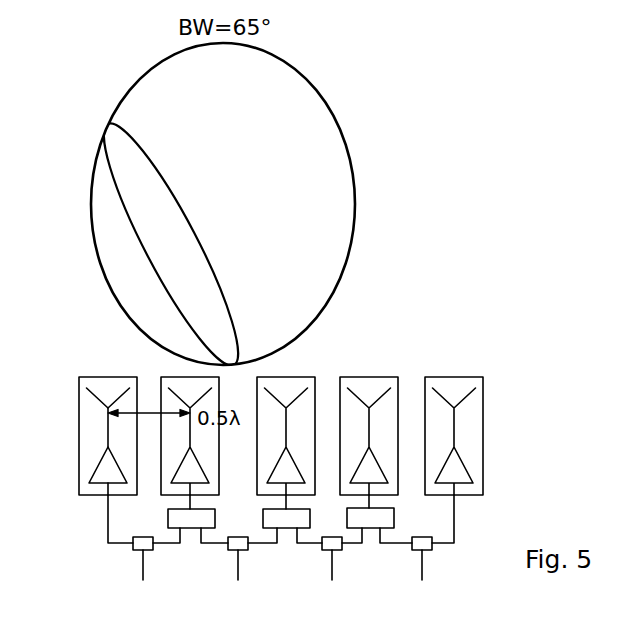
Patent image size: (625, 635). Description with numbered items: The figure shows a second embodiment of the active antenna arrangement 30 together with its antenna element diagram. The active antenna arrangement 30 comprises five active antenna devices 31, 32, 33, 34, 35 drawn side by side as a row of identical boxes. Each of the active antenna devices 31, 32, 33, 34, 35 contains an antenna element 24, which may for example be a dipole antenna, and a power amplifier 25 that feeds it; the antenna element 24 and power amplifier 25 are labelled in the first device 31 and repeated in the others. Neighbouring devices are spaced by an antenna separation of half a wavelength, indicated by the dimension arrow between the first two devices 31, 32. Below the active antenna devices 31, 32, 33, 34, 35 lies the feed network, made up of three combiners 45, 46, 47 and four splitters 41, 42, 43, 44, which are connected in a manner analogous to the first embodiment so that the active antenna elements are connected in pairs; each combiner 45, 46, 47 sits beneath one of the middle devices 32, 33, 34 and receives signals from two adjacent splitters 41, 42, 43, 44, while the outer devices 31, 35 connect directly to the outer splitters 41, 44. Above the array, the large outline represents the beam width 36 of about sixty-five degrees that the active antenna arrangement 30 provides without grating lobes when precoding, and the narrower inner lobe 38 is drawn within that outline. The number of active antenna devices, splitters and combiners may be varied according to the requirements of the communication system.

The antenna element 24 is at (97, 397).
The power amplifier 25 is at (100, 467).
The active antenna arrangement 30 is at (513, 280).
The active antenna device 31 is at (77, 445).
The active antenna device 32 is at (173, 382).
The active antenna device 33 is at (299, 381).
The active antenna device 34 is at (379, 381).
The active antenna device 35 is at (463, 380).
The beam width 36 is at (343, 275).
The narrow beam radiation pattern 38 is at (127, 213).
The splitter 41 is at (133, 551).
The splitter 42 is at (228, 551).
The splitter 43 is at (322, 551).
The splitter 44 is at (412, 550).
The combiner 45 is at (168, 518).
The combiner 46 is at (263, 518).
The combiner 47 is at (394, 518).